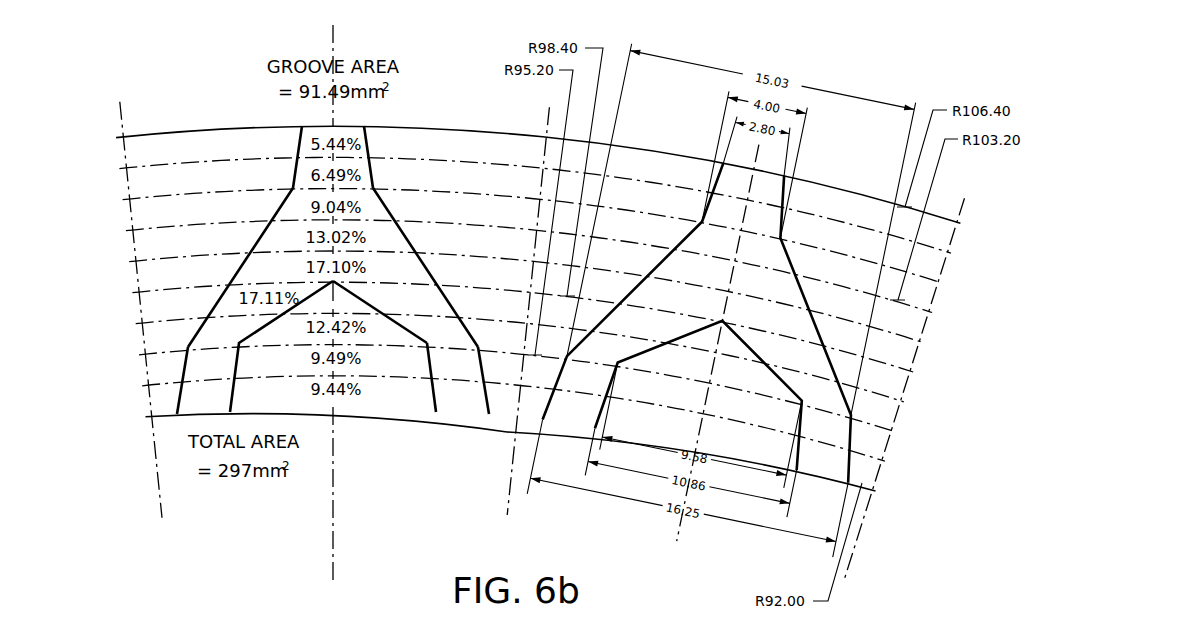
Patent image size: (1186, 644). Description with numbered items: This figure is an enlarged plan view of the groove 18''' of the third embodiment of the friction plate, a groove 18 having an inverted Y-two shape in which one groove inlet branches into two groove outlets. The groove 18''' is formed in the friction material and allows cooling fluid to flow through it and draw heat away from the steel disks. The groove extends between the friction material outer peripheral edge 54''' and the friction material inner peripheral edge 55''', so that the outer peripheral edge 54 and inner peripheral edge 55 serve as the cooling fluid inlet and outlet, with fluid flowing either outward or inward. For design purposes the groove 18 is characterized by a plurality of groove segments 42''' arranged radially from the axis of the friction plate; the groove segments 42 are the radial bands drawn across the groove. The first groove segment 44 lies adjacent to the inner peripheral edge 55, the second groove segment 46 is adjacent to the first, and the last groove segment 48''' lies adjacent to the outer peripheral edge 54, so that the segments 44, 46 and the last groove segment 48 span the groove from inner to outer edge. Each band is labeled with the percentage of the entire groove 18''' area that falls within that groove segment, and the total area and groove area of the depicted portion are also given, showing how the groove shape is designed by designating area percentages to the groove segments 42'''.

The groove 18''' is at (313, 330).
The groove segments 42''' is at (325, 267).
The last groove segment 48''' is at (286, 157).
The friction material outer peripheral edge 54''' is at (538, 151).
The friction material inner peripheral edge 55''' is at (626, 460).
The groove 18 is at (313, 330).
The groove segments 42 is at (325, 267).
The first groove segment 44 is at (149, 406).
The second groove segment 46 is at (242, 346).
The last groove segment 48 is at (286, 157).
The friction material outer peripheral edge 54 is at (538, 151).
The friction material inner peripheral edge 55 is at (626, 460).